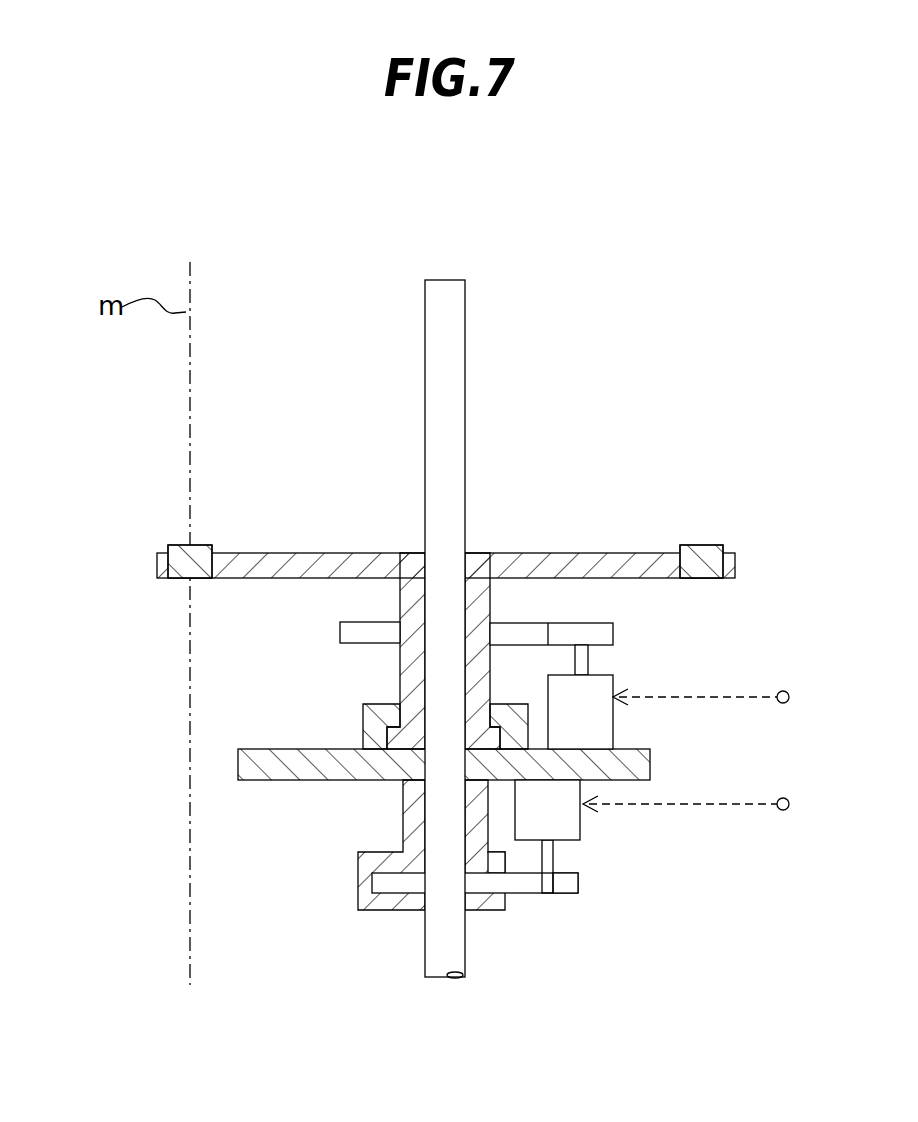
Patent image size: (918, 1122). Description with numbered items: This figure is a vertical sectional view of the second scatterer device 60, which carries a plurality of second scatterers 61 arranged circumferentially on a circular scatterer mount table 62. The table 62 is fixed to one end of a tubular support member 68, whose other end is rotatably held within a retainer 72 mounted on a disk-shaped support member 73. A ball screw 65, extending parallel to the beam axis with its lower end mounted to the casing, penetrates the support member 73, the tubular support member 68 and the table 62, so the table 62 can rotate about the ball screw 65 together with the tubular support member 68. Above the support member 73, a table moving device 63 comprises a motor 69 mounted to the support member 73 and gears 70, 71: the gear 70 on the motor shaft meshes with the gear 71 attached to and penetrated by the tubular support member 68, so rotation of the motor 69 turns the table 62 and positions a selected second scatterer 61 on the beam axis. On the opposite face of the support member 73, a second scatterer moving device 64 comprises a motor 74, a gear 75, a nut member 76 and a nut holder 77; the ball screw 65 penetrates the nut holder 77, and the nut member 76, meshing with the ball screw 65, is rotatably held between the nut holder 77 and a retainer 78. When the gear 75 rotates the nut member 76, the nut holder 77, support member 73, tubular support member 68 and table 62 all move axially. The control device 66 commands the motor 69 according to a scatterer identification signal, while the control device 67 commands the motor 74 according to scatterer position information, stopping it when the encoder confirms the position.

The second scatterer device 60 is at (448, 676).
The second scatterer 61 is at (200, 545).
The scatterer mount table 62 is at (620, 553).
The table moving device 63 is at (643, 672).
The second scatterer moving device 64 is at (549, 676).
The ball screw 65 is at (678, 815).
The control device 66 is at (789, 697).
The control device 67 is at (789, 804).
The tubular support member 68 is at (400, 668).
The motor 69 is at (629, 712).
The gear 70 is at (613, 635).
The gear 71 is at (518, 622).
The retainer 72 is at (362, 730).
The support member 73 is at (238, 770).
The motor 74 is at (582, 825).
The gear 75 is at (578, 885).
The nut member 76 is at (503, 883).
The nut holder 77 is at (488, 835).
The retainer 78 is at (488, 912).